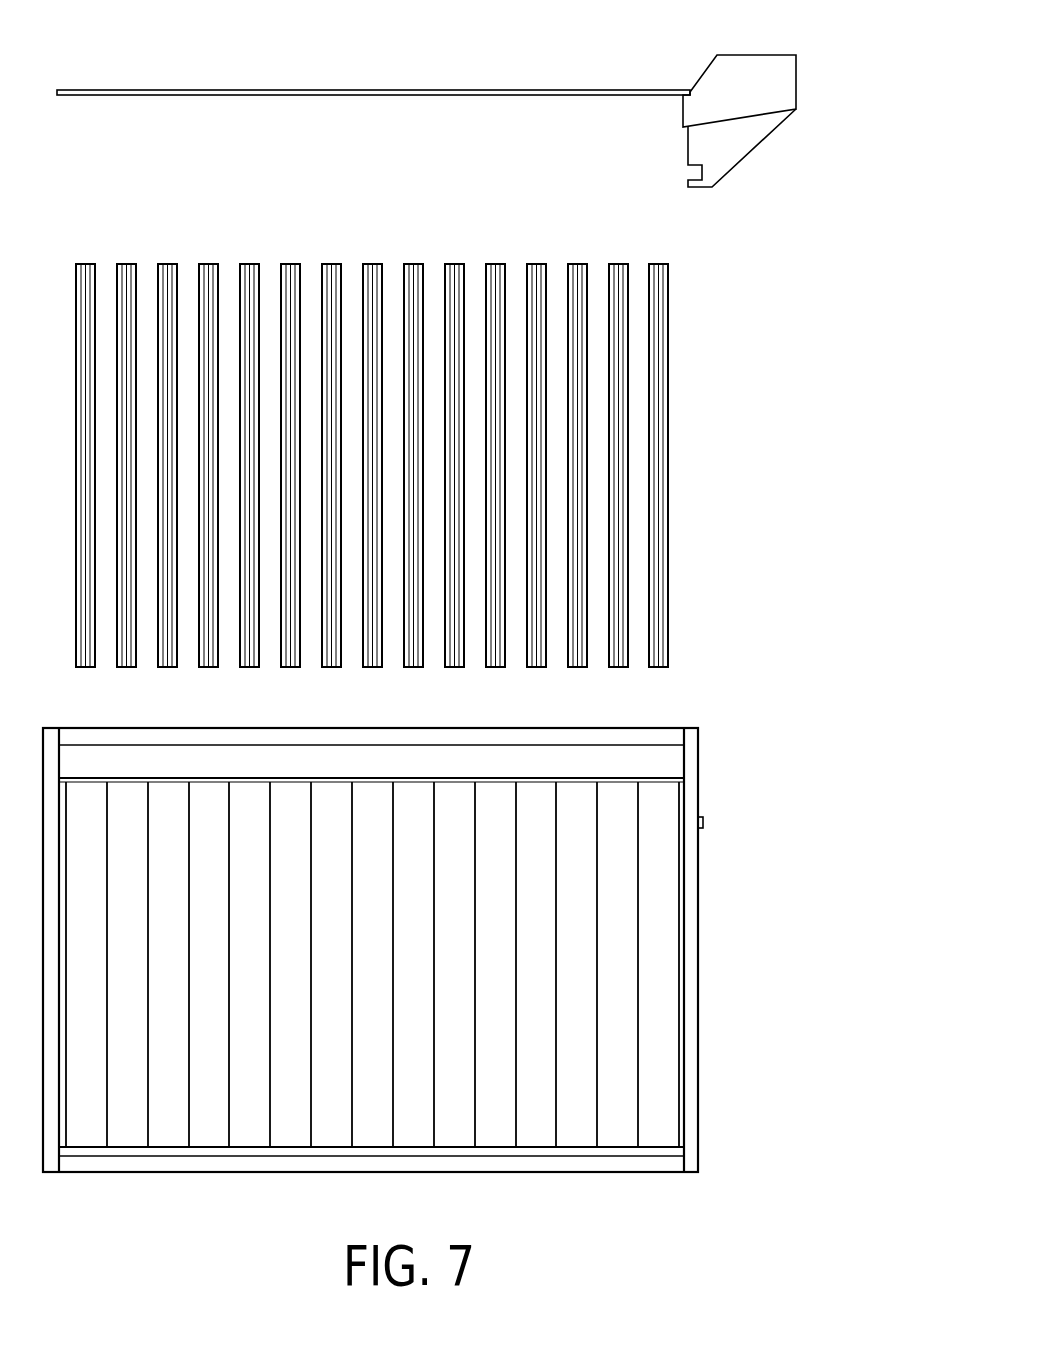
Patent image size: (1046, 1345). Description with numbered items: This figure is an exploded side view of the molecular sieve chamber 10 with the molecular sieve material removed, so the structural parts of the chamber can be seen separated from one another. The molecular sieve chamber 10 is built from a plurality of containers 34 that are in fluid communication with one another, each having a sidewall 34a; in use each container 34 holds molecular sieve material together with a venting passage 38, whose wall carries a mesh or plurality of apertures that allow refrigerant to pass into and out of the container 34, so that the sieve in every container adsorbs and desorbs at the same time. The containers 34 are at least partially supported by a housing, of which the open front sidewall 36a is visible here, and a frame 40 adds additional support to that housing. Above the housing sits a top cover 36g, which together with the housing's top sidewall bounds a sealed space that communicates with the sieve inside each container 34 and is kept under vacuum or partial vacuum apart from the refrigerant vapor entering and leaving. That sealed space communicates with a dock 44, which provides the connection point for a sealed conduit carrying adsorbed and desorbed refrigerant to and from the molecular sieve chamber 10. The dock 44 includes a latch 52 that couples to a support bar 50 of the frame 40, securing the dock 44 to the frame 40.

The molecular sieve chamber 10 is at (777, 342).
The container 34 is at (442, 964).
The sidewall 34a is at (527, 1063).
The front sidewall 36a is at (685, 1141).
The top cover 36g is at (537, 90).
The venting passage 38 is at (658, 545).
The frame 40 is at (690, 780).
The dock 44 is at (777, 75).
The support bar 50 is at (704, 826).
The latch 52 is at (742, 138).